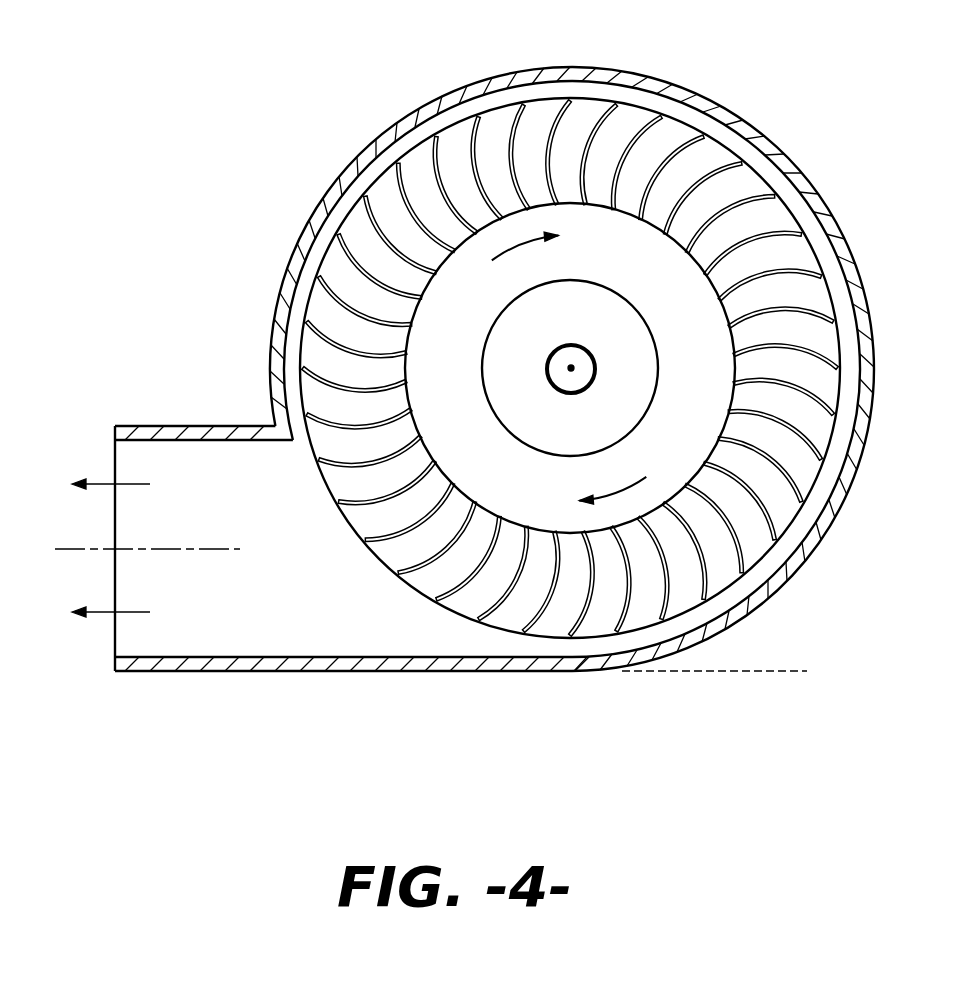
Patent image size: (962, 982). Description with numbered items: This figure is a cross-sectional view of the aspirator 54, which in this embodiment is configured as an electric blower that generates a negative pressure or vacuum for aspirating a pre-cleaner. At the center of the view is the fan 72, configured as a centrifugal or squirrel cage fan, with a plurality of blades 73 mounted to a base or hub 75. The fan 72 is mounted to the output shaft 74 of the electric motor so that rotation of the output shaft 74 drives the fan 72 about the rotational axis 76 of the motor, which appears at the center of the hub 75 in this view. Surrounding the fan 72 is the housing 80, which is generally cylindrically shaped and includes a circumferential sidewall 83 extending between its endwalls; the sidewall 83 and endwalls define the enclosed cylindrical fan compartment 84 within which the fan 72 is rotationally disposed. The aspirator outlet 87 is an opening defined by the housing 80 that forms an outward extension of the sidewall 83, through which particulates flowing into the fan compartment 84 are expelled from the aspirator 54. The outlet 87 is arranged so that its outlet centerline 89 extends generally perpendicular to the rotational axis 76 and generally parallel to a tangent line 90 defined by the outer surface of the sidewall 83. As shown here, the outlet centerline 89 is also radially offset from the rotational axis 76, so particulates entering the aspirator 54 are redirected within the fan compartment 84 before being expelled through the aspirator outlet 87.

The aspirator 54 is at (288, 89).
The fan 72 is at (497, 108).
The blades 73 is at (318, 300).
The output shaft 74 is at (572, 345).
The hub 75 is at (358, 233).
The rotational axis 76 is at (571, 372).
The housing 80 is at (740, 108).
The circumferential sidewall 83 is at (860, 270).
The fan compartment 84 is at (590, 90).
The aspirator outlet 87 is at (210, 425).
The outlet centerline 89 is at (92, 548).
The tangent line 90 is at (725, 672).